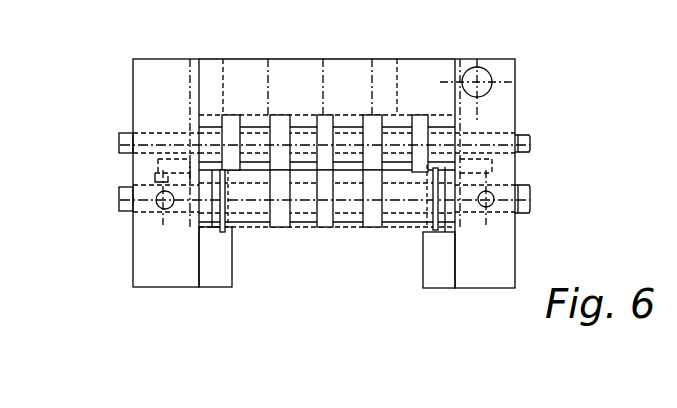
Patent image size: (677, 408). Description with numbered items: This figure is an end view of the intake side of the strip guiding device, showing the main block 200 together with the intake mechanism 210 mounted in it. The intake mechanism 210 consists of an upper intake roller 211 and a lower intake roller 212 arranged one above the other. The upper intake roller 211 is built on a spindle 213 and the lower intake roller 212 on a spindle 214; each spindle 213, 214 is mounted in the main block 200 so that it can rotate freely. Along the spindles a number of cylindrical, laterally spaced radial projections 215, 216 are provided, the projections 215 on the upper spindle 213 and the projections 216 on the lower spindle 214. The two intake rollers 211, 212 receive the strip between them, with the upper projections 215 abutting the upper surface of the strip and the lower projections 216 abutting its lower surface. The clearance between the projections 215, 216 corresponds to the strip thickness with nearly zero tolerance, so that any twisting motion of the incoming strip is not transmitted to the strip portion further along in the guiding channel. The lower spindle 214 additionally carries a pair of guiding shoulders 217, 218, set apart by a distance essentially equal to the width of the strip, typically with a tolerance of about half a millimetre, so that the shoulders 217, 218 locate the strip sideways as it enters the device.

The main block 200 is at (513, 248).
The intake mechanism 210 is at (131, 172).
The upper intake roller 211 is at (536, 142).
The lower intake roller 212 is at (539, 202).
The spindle 213 is at (521, 137).
The spindle 214 is at (532, 192).
The radial projections 215 is at (420, 110).
The radial projections 216 is at (430, 232).
The guiding shoulder 217 is at (220, 232).
The guiding shoulder 218 is at (445, 228).